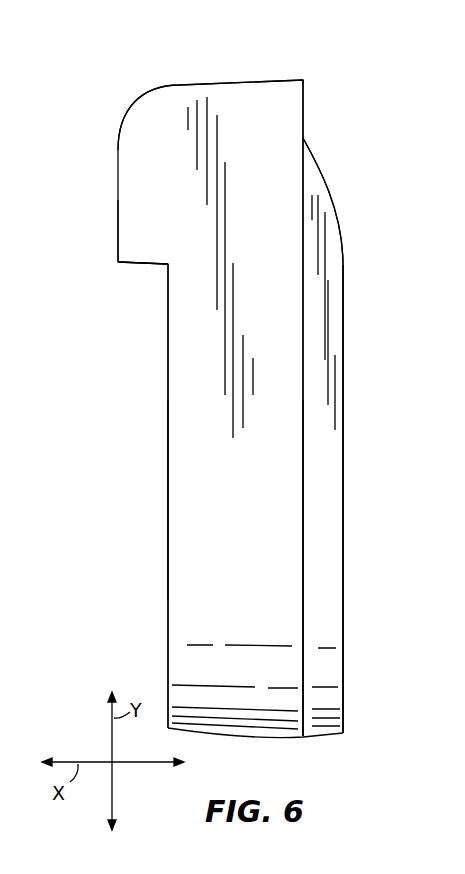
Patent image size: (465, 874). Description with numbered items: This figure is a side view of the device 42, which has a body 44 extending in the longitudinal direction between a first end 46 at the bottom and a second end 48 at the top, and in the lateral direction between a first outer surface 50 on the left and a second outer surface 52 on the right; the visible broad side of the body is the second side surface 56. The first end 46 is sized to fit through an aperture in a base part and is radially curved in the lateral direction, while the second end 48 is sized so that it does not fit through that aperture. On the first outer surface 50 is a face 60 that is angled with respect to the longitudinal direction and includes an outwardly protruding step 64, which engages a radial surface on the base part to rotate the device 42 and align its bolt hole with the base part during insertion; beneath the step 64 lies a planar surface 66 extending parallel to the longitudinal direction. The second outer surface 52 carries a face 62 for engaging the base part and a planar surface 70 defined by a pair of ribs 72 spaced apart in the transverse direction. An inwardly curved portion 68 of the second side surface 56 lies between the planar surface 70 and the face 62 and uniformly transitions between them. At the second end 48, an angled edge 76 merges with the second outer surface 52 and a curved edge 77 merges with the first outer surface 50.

The device 42 is at (151, 56).
The body 44 is at (185, 482).
The first end 46 is at (279, 748).
The second end 48 is at (223, 67).
The first outer surface 50 is at (160, 388).
The second outer surface 52 is at (368, 329).
The second side surface 56 is at (254, 533).
The face 60 is at (125, 268).
The face 62 is at (303, 112).
The outwardly protruding step 64 is at (156, 267).
The planar surface 66 is at (159, 538).
The inwardly curved portion 68 is at (329, 176).
The planar surface 70 is at (343, 400).
The ribs 72 is at (320, 534).
The angled edge 76 is at (303, 80).
The curved edge 77 is at (138, 109).